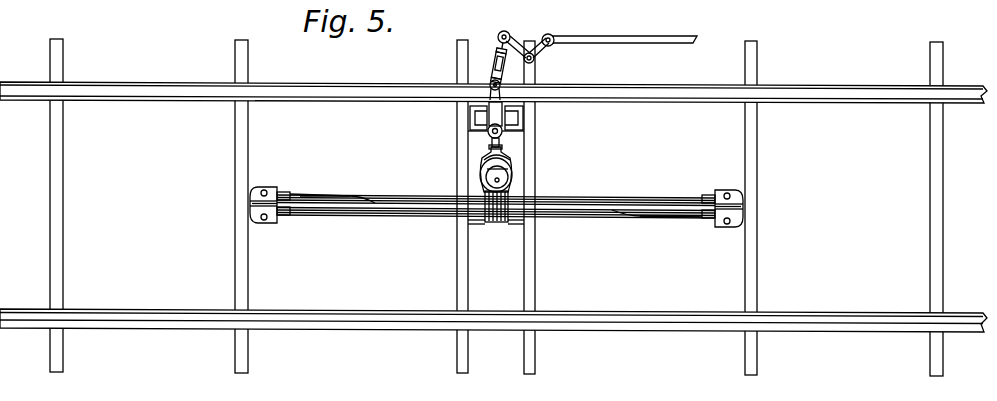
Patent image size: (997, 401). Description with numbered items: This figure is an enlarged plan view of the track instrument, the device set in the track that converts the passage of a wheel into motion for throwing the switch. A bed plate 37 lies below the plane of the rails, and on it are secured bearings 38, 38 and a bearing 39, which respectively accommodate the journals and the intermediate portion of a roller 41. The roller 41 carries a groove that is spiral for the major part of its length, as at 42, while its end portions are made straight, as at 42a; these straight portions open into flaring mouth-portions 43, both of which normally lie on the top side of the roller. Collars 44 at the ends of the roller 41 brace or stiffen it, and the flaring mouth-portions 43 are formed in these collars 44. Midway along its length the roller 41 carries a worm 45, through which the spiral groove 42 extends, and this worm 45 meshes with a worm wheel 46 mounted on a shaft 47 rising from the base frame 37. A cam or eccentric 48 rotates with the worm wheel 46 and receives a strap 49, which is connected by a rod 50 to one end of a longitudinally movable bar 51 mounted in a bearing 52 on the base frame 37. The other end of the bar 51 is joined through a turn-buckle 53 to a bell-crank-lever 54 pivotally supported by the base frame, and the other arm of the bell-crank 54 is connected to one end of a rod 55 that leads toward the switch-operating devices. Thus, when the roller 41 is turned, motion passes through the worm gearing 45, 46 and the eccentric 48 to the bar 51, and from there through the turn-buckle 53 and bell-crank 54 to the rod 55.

The bed plate 37 is at (536, 280).
The bearings 38 is at (496, 207).
The bearing 39 is at (473, 224).
The roller 41 is at (496, 206).
The spiral groove 42 is at (370, 198).
The straight groove portions 42a is at (655, 212).
The flaring mouth-portions 43 is at (282, 194).
The collars 44 is at (292, 213).
The worm 45 is at (494, 222).
The worm wheel 46 is at (483, 182).
The shaft 47 is at (509, 183).
The cam or eccentric 48 is at (481, 166).
The strap 49 is at (510, 167).
The rod 50 is at (492, 145).
The longitudinally movable bar 51 is at (497, 118).
The bearing 52 is at (515, 129).
The turn-buckle 53 is at (493, 79).
The bell-crank-lever 54 is at (549, 47).
The rod 55 is at (643, 32).